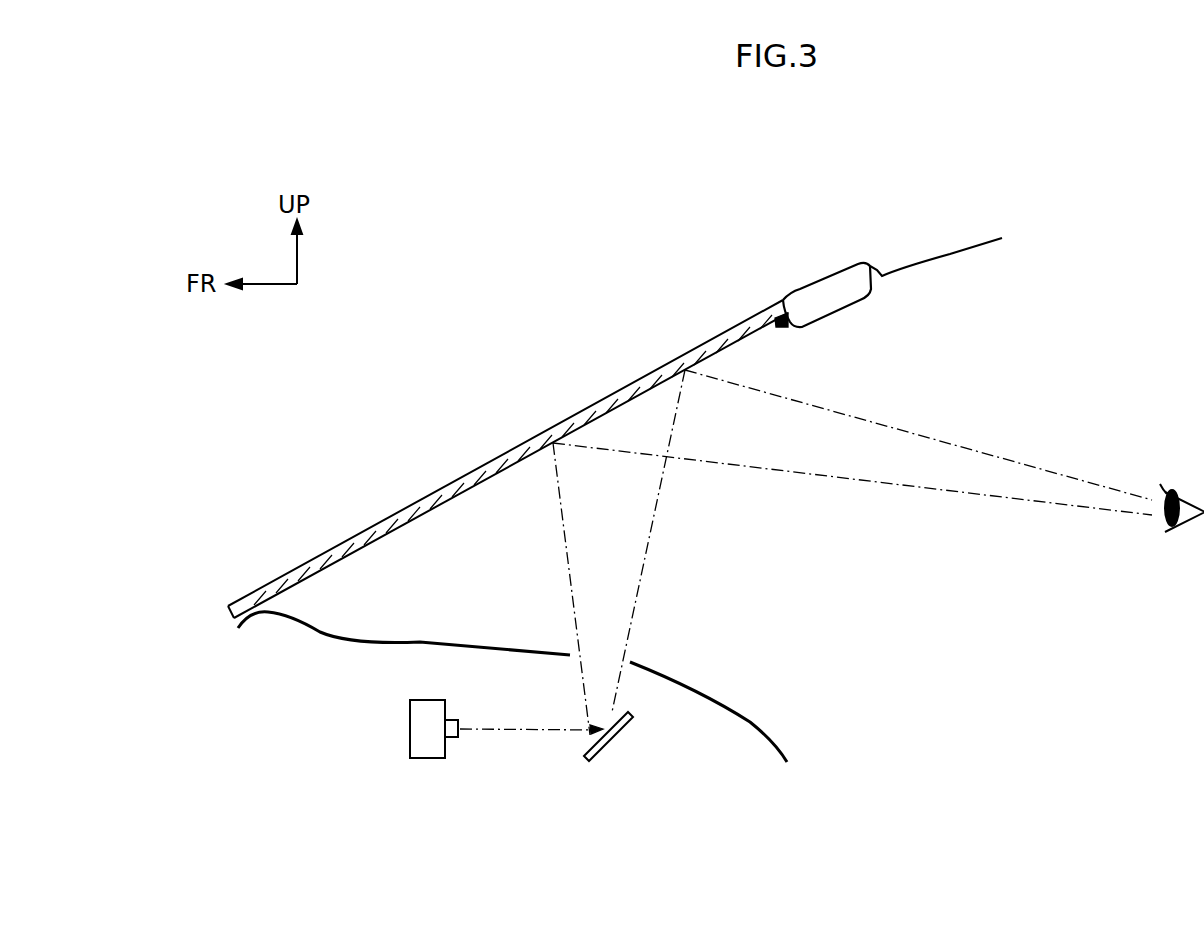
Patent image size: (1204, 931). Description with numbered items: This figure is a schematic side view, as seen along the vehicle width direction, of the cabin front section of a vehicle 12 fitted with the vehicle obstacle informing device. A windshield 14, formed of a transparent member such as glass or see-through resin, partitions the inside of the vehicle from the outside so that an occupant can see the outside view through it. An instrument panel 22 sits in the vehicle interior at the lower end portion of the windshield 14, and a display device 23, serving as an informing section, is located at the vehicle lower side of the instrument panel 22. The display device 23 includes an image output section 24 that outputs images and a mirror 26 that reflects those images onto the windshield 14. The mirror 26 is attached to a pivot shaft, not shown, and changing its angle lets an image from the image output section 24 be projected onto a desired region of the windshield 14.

The vehicle 12 is at (811, 229).
The windshield 14 is at (444, 487).
The instrument panel 22 is at (448, 642).
The display device 23 is at (502, 761).
The image output section 24 is at (410, 723).
The mirror 26 is at (617, 725).